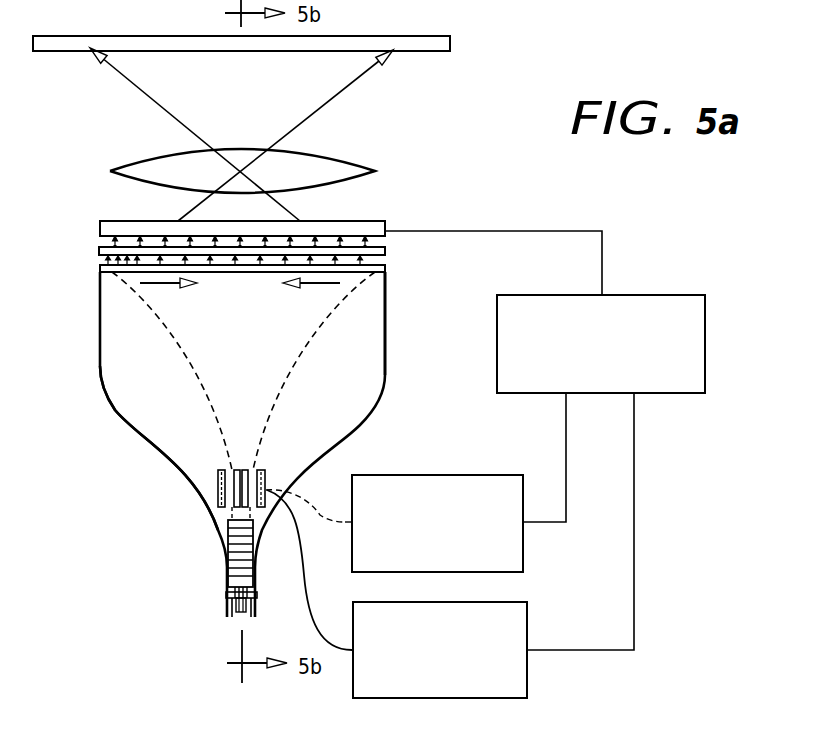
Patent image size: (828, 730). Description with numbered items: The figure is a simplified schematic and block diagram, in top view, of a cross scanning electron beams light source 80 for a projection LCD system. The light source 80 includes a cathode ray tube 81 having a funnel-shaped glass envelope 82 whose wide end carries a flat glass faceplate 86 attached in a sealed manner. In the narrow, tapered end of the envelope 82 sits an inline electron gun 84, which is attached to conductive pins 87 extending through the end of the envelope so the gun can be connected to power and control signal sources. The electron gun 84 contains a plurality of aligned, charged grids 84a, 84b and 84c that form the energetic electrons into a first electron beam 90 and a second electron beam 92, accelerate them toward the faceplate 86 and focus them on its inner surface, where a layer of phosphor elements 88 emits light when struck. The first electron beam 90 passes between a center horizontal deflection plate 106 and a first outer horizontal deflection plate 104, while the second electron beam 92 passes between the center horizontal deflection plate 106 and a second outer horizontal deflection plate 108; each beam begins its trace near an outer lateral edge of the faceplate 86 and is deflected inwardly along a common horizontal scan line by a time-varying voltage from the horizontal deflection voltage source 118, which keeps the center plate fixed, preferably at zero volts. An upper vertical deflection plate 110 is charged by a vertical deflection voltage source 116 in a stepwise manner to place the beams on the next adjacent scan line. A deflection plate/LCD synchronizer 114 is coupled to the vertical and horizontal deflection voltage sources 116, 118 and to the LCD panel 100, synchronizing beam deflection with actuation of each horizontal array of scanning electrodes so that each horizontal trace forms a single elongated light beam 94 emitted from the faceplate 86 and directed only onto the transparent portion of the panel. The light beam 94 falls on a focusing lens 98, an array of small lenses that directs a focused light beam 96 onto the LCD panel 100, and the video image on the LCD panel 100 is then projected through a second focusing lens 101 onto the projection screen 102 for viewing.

The cross scanning electron beams light source 80 is at (105, 497).
The cathode ray tube 81 is at (89, 405).
The glass envelope 82 is at (135, 437).
The electron gun 84 is at (196, 575).
The charged grid 84a is at (228, 527).
The charged grid 84b is at (228, 542).
The charged grid 84c is at (228, 560).
The glass faceplate 86 is at (385, 268).
The conductive pins 87 is at (238, 614).
The layer of phosphor elements 88 is at (385, 280).
The first electron beam 90 is at (183, 354).
The second electron beam 92 is at (311, 333).
The light beam 94 is at (100, 262).
The focused light beam 96 is at (113, 240).
The focusing lens 98 is at (385, 251).
The LCD panel 100 is at (385, 222).
The second focusing lens 101 is at (335, 153).
The projection screen 102 is at (450, 44).
The first outer horizontal deflection plate 104 is at (219, 470).
The center horizontal deflection plate 106 is at (242, 470).
The second outer horizontal deflection plate 108 is at (263, 470).
The upper vertical deflection plate 110 is at (266, 478).
The deflection plate/LCD synchronizer 114 is at (620, 295).
The vertical deflection voltage source 116 is at (430, 475).
The horizontal deflection voltage source 118 is at (527, 630).